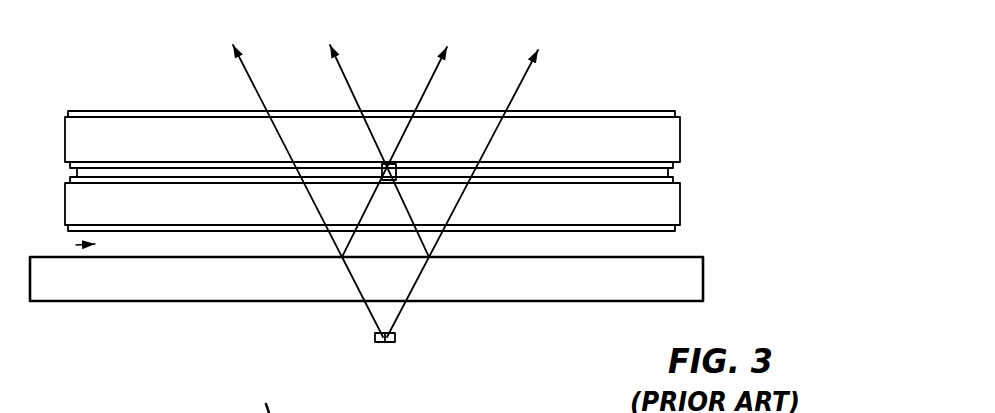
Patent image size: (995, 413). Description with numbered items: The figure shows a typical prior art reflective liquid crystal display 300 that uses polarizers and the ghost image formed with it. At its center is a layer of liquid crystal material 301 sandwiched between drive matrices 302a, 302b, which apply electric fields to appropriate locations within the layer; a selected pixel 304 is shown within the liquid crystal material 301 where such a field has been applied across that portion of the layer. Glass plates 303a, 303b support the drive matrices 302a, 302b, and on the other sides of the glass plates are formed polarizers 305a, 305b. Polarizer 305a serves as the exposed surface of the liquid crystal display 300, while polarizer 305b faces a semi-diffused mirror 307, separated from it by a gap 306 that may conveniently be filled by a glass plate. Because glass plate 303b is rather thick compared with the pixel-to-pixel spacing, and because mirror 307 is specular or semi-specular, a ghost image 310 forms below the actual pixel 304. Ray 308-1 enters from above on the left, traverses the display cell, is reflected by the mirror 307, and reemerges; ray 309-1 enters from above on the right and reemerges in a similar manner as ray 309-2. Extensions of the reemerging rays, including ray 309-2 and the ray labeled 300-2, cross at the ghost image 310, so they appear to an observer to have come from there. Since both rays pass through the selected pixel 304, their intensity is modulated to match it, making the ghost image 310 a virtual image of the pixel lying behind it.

The liquid crystal display 300 is at (442, 202).
The layer of liquid crystal material 301 is at (680, 172).
The drive matrix 302a is at (674, 165).
The drive matrix 302b is at (652, 184).
The glass plate 303a is at (668, 131).
The glass plate 303b is at (641, 216).
The selected pixel 304 is at (403, 162).
The polarizer 305a is at (103, 114).
The polarizer 305b is at (371, 241).
The gap 306 is at (65, 245).
The semi-diffused mirror 307 is at (237, 297).
The ray 308-1 is at (349, 86).
The ray 309-1 is at (394, 152).
The ray 309-2 is at (255, 86).
The light ray 300-2 is at (521, 86).
The ghost image 310 is at (398, 338).